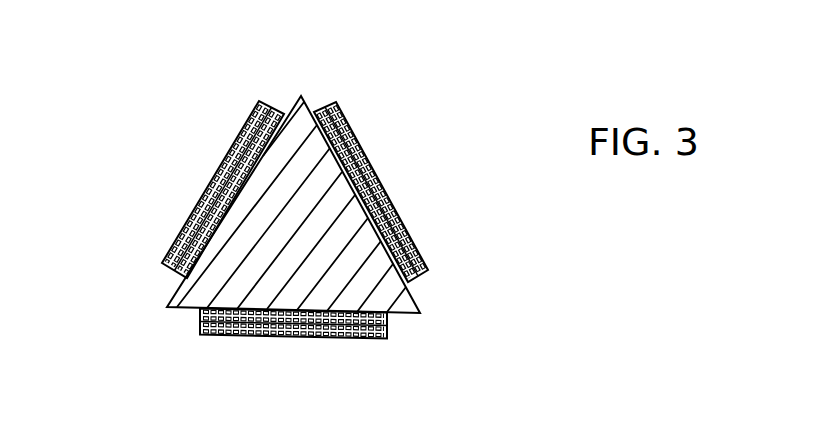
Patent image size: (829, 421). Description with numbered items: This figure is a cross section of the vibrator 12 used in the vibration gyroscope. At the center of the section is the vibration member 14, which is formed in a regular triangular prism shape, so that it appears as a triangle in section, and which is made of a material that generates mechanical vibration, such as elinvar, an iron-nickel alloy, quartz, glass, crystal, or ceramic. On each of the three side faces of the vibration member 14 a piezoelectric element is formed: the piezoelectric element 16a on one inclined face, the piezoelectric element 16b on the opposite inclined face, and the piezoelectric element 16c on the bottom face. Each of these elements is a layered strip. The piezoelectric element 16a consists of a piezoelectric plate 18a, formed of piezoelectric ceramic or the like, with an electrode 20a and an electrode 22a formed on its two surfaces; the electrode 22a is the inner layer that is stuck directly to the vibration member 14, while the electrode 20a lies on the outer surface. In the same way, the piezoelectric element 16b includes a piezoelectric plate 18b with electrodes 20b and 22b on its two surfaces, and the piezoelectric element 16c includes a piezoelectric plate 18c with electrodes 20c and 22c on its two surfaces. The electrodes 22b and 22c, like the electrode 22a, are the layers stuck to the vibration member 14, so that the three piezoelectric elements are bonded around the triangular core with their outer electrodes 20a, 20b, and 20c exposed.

The vibrator 12 is at (120, 90).
The vibration member 14 is at (400, 298).
The piezoelectric element 16a is at (245, 115).
The piezoelectric element 16b is at (350, 110).
The piezoelectric element 16c is at (208, 343).
The piezoelectric plate 18a is at (224, 184).
The piezoelectric plate 18b is at (377, 168).
The piezoelectric plate 18c is at (302, 335).
The electrode 20a is at (242, 138).
The electrode 20b is at (360, 137).
The electrode 20c is at (249, 336).
The electrode 22a is at (181, 228).
The electrode 22b is at (405, 223).
The electrode 22c is at (368, 338).